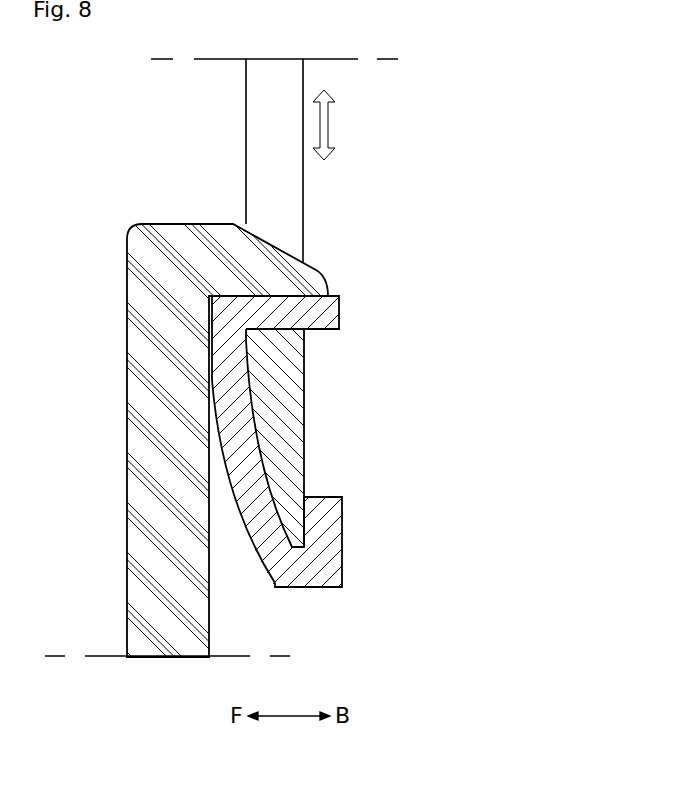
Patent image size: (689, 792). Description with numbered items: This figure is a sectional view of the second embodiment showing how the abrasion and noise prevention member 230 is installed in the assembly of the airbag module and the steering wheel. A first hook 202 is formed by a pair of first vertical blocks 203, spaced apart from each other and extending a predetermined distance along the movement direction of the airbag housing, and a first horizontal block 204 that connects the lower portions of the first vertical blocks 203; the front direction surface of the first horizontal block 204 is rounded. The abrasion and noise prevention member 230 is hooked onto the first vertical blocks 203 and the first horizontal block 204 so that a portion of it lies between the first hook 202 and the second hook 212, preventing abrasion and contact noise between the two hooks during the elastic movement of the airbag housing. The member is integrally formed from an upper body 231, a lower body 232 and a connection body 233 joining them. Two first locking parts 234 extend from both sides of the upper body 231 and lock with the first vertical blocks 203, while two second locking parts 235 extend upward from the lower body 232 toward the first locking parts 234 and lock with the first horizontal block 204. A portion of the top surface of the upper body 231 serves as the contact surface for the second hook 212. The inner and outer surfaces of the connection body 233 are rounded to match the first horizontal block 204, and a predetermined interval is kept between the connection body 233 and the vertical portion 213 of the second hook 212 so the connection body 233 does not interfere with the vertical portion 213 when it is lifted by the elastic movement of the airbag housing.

The first hook 202 is at (317, 364).
The first vertical block 203 is at (285, 194).
The first horizontal block 204 is at (317, 465).
The second hook 212 is at (188, 418).
The vertical portion 213 is at (147, 437).
The abrasion and noise prevention member 230 is at (317, 465).
The upper body 231 is at (265, 317).
The lower body 232 is at (335, 567).
The connection body 233 is at (237, 440).
The first locking part 234 is at (327, 312).
The second locking part 235 is at (323, 520).